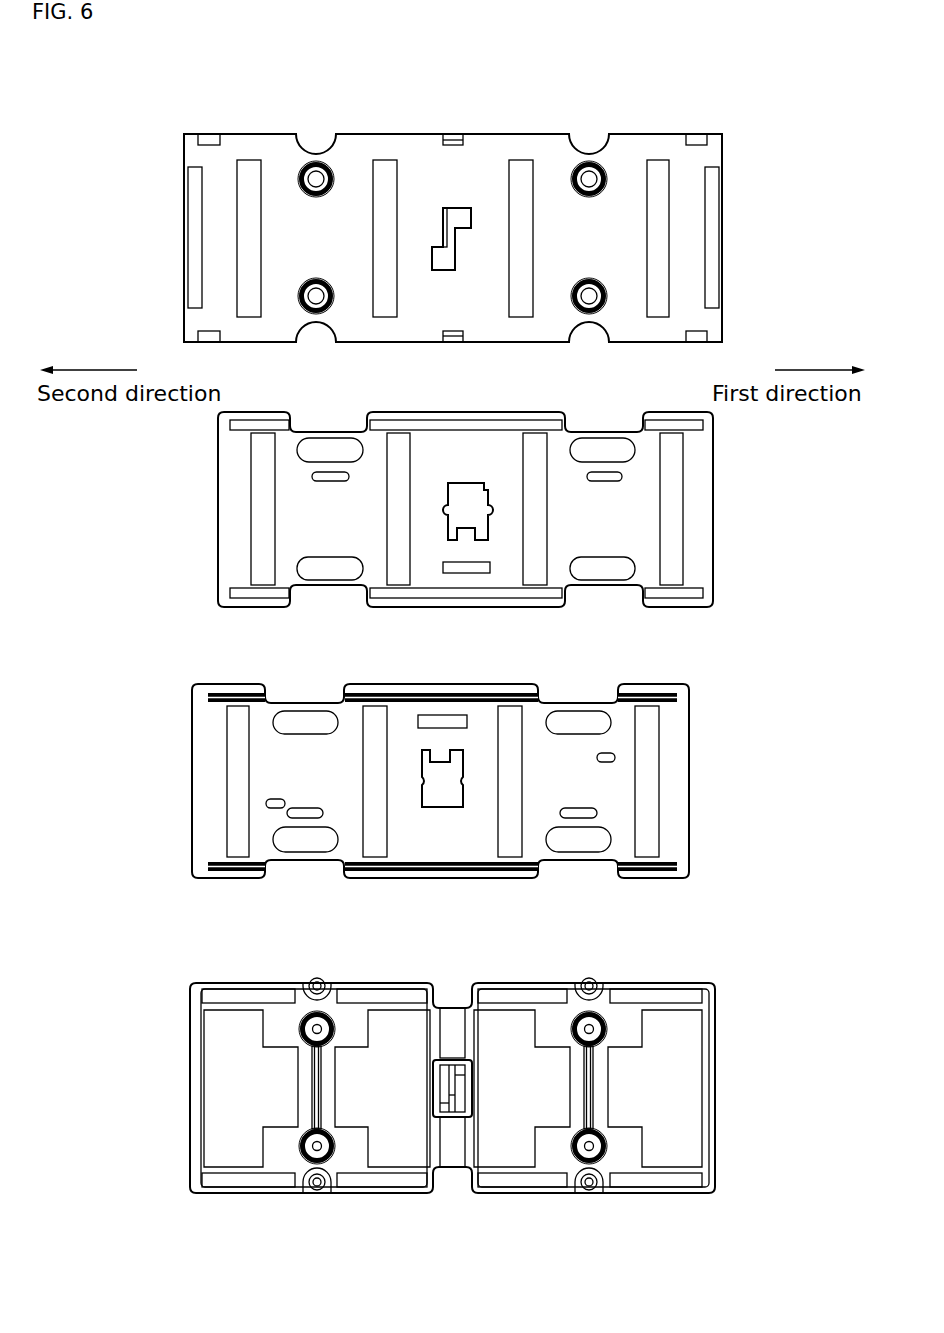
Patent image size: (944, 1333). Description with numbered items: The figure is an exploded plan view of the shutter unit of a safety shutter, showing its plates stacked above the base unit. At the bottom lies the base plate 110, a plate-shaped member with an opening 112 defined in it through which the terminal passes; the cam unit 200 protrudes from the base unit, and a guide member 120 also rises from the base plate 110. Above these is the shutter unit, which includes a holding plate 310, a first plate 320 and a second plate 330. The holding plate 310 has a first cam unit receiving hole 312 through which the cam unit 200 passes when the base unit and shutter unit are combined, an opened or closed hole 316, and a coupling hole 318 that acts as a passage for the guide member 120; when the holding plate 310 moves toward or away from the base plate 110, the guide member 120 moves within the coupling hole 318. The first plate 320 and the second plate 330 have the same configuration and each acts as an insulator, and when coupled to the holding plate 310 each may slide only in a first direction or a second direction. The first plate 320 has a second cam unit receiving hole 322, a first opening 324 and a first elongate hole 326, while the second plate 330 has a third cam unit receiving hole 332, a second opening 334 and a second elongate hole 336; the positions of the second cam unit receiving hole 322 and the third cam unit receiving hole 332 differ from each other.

The base plate 110 is at (715, 1082).
The opening 112 is at (665, 1092).
The guide member 120 is at (589, 1187).
The cam unit 200 is at (437, 1084).
The holding plate 310 is at (722, 237).
The first cam unit receiving hole 312 is at (455, 240).
The opened or closed hole 316 is at (657, 245).
The coupling hole 318 is at (316, 170).
The first plate 320 is at (713, 504).
The second cam unit receiving hole 322 is at (464, 498).
The first opening 324 is at (260, 507).
The first elongate hole 326 is at (330, 452).
The second plate 330 is at (689, 775).
The third cam unit receiving hole 332 is at (447, 782).
The second opening 334 is at (236, 776).
The second elongate hole 336 is at (578, 838).